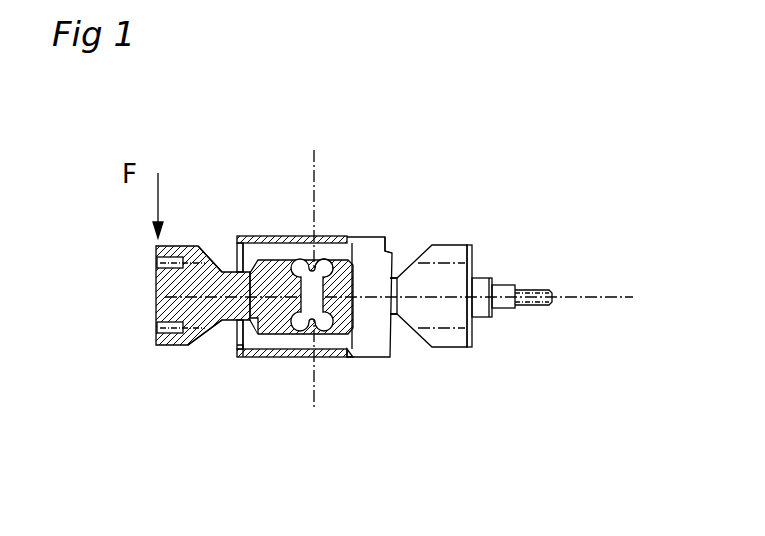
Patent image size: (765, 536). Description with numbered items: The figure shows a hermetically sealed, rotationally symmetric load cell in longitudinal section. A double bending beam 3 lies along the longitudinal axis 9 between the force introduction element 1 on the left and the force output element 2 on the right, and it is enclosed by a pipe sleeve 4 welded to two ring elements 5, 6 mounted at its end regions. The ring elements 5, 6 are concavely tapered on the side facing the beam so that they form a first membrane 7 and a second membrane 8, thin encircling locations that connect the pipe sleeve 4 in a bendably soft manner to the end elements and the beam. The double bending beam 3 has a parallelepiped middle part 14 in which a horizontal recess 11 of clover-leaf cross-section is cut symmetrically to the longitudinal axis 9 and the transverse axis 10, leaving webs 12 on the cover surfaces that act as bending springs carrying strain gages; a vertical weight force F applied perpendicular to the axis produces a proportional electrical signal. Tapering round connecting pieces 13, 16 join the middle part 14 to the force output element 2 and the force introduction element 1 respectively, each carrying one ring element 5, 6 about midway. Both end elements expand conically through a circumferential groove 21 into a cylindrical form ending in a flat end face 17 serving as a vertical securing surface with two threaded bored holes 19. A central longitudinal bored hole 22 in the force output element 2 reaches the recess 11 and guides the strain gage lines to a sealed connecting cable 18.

The force introduction element 1 is at (156, 305).
The force output element 2 is at (438, 315).
The double bending beam 3 is at (282, 258).
The pipe sleeve 4 is at (270, 357).
The ring element 5 is at (235, 238).
The ring element 6 is at (384, 237).
The first membrane 7 is at (228, 318).
The second membrane 8 is at (390, 345).
The longitudinal axis 9 is at (608, 297).
The transverse axis 10 is at (310, 412).
The recess 11 is at (323, 257).
The webs 12 is at (302, 258).
The second connecting piece 13 is at (398, 290).
The middle part 14 is at (353, 355).
The first connecting piece 16 is at (241, 357).
The end face 17 is at (156, 283).
The connecting cable 18 is at (502, 295).
The threaded bored holes 19 is at (156, 333).
The circumferential groove 21 is at (210, 246).
The longitudinal bored hole 22 is at (455, 293).